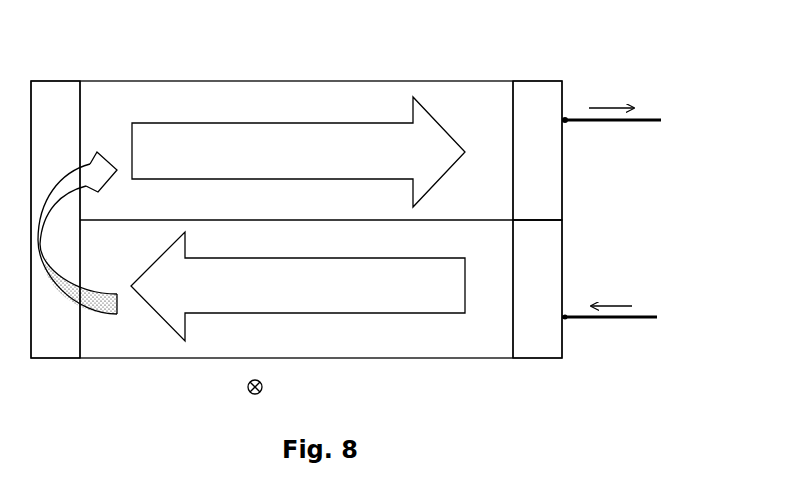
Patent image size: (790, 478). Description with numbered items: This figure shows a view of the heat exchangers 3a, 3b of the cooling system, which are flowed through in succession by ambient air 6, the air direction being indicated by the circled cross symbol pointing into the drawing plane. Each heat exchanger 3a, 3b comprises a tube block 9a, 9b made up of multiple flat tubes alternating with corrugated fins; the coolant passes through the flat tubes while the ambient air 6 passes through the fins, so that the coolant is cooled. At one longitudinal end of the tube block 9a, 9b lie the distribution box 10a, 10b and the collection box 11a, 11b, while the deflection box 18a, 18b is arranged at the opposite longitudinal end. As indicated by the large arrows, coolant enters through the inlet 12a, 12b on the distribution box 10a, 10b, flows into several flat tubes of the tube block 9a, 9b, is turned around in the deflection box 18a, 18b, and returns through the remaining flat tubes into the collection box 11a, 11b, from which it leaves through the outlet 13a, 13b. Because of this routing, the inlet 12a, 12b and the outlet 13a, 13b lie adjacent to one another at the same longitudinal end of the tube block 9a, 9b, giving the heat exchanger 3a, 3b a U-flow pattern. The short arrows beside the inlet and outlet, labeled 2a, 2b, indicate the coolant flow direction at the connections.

The fluid flow direction 2a is at (660, 181).
The fluid flow direction 2b is at (602, 108).
The first heat exchanger 3a is at (319, 179).
The second heat exchanger 3b is at (580, 32).
The ambient air 6 is at (264, 388).
The tube block 9a is at (251, 183).
The tube block 9b is at (349, 105).
The distribution box 10a is at (611, 318).
The distribution box 10b is at (540, 347).
The collection box 11a is at (612, 150).
The collection box 11b is at (548, 180).
The inlet 12a is at (642, 341).
The inlet 12b is at (564, 320).
The outlet 13a is at (645, 141).
The outlet 13b is at (566, 123).
The deflection box 18a is at (88, 191).
The deflection box 18b is at (57, 107).